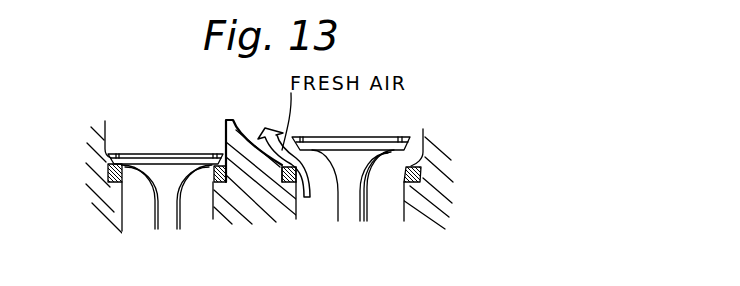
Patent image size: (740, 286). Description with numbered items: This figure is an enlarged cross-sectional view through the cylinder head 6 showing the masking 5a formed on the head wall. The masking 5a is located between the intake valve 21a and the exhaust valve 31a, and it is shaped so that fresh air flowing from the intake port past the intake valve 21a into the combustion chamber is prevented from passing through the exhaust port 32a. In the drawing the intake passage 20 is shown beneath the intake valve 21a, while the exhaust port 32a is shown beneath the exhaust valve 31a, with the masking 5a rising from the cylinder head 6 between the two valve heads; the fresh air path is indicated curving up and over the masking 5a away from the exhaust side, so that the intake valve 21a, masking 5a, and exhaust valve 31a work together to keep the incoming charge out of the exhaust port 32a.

The masking 5a is at (247, 132).
The cylinder head 6 is at (262, 196).
The intake port 20 is at (323, 210).
The intake valve 21a is at (348, 142).
The exhaust valve 31a is at (163, 153).
The exhaust port 32a is at (142, 212).